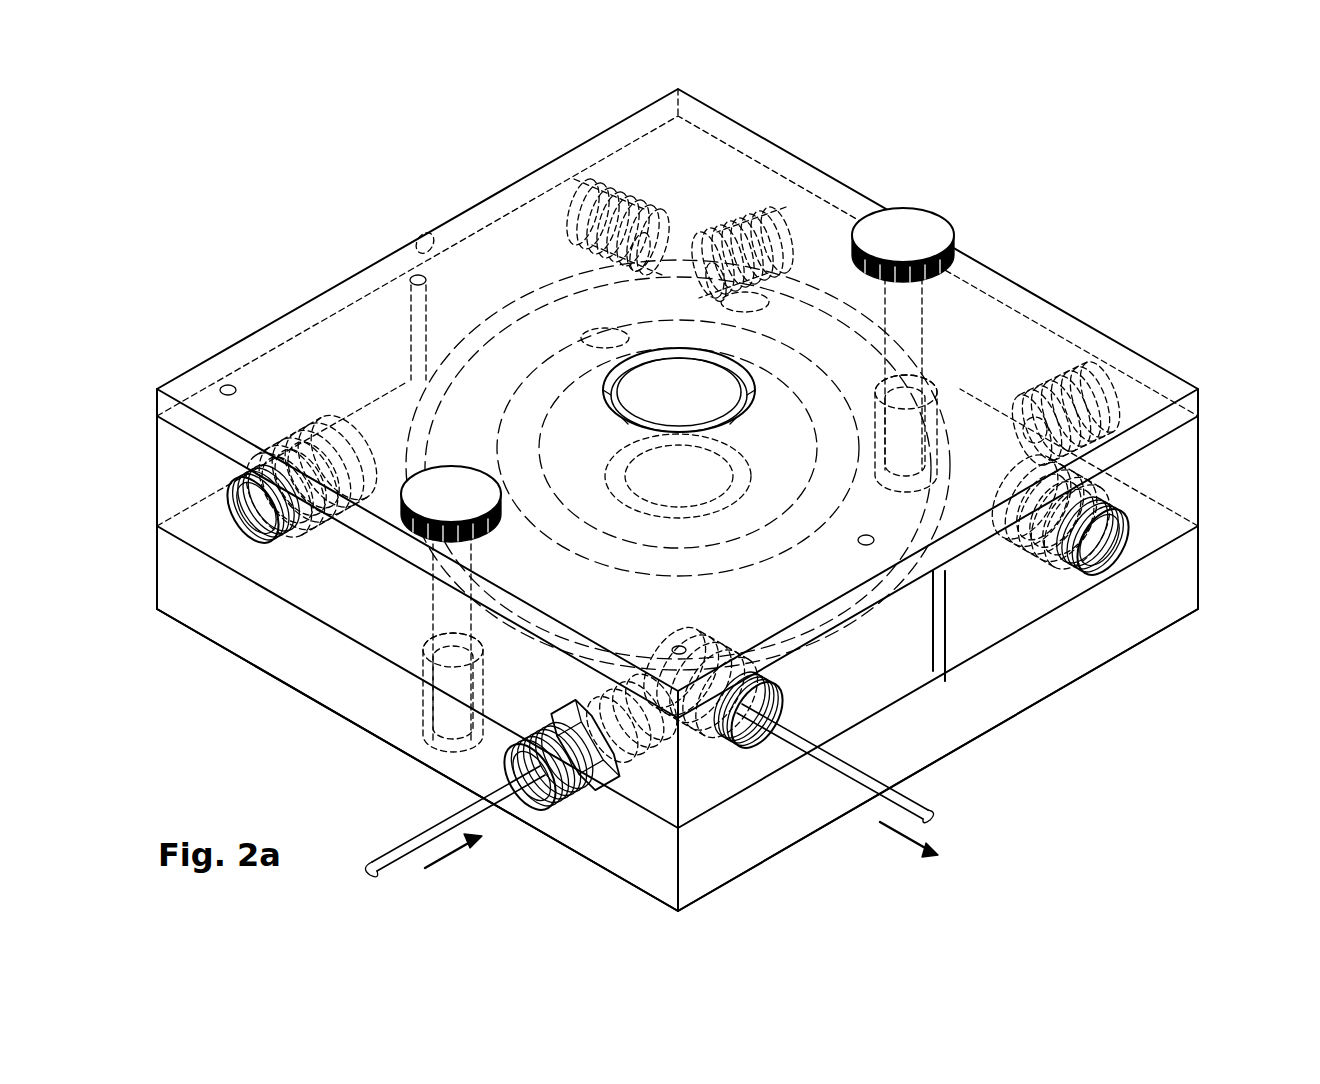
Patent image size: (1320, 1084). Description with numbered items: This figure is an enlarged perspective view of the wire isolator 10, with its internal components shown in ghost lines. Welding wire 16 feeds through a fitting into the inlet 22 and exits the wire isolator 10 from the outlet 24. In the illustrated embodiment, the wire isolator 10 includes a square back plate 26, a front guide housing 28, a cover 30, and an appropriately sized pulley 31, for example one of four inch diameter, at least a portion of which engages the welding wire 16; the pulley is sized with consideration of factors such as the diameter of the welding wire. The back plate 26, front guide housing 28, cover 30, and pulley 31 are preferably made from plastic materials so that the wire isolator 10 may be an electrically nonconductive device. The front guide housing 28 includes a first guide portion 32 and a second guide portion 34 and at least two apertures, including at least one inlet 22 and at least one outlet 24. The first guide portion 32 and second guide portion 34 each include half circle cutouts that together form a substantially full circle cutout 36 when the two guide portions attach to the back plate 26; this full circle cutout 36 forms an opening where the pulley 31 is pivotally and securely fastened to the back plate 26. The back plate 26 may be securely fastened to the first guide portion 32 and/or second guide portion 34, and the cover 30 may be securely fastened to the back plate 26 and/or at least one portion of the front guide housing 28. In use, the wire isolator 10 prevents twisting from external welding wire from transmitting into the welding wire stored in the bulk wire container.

The wire isolator 10 is at (1212, 626).
The welding wire 16 is at (407, 841).
The inlet 22 is at (788, 225).
The outlet 24 is at (572, 204).
The back plate 26 is at (787, 800).
The front guide housing 28 is at (1200, 452).
The cover 30 is at (1200, 401).
The pulley 31 is at (880, 612).
The first guide portion 32 is at (1013, 607).
The second guide portion 34 is at (388, 618).
The full circle cutout 36 is at (933, 360).